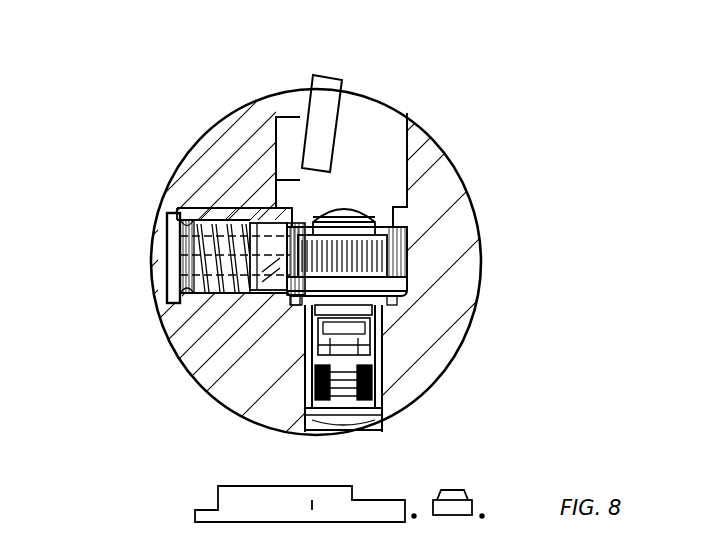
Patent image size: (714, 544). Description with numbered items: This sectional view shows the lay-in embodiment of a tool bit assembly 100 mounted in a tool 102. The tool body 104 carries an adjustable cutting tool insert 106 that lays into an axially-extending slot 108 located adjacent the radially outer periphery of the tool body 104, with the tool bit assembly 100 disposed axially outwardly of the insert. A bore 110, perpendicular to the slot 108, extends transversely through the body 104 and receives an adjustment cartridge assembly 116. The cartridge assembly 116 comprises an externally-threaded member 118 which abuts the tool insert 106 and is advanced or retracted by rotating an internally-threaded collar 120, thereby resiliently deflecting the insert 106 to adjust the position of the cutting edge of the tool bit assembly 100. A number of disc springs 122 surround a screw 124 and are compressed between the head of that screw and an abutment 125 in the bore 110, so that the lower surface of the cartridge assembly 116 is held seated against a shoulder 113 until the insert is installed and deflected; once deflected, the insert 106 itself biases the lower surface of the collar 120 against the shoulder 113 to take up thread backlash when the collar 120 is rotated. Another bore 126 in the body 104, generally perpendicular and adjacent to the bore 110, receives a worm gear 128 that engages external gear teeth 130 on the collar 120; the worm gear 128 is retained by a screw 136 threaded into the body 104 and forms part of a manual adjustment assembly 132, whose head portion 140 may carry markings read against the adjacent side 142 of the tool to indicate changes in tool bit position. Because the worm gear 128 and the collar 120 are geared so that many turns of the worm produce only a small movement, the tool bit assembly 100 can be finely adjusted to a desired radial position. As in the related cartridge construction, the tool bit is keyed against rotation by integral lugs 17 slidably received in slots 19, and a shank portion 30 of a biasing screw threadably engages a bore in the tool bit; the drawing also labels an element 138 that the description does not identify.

The tool bit assembly 100 is at (324, 108).
The tool 102 is at (497, 238).
The tool body 104 is at (210, 378).
The adjustable cutting tool insert 106 is at (380, 141).
The axially-extending slot 108 is at (285, 112).
The bore 110 is at (398, 294).
The shoulder 113 is at (240, 403).
The adjustment cartridge assembly 116 is at (396, 306).
The externally-threaded member 118 is at (346, 207).
The internally-threaded collar 120 is at (410, 257).
The disc springs 122 is at (380, 406).
The screw 124 is at (355, 422).
The abutment 125 is at (376, 372).
The bore 126 is at (250, 214).
The worm gear 128 is at (220, 226).
The external gear teeth 130 is at (390, 257).
The manual adjustment assembly 132 is at (226, 204).
The screw 136 is at (184, 302).
The coil spring 138 is at (223, 281).
The head portion 140 is at (174, 220).
The adjacent side 142 is at (170, 236).
The integral lugs 17 is at (300, 395).
The slots 19 is at (262, 385).
The shank portion 30 is at (343, 397).